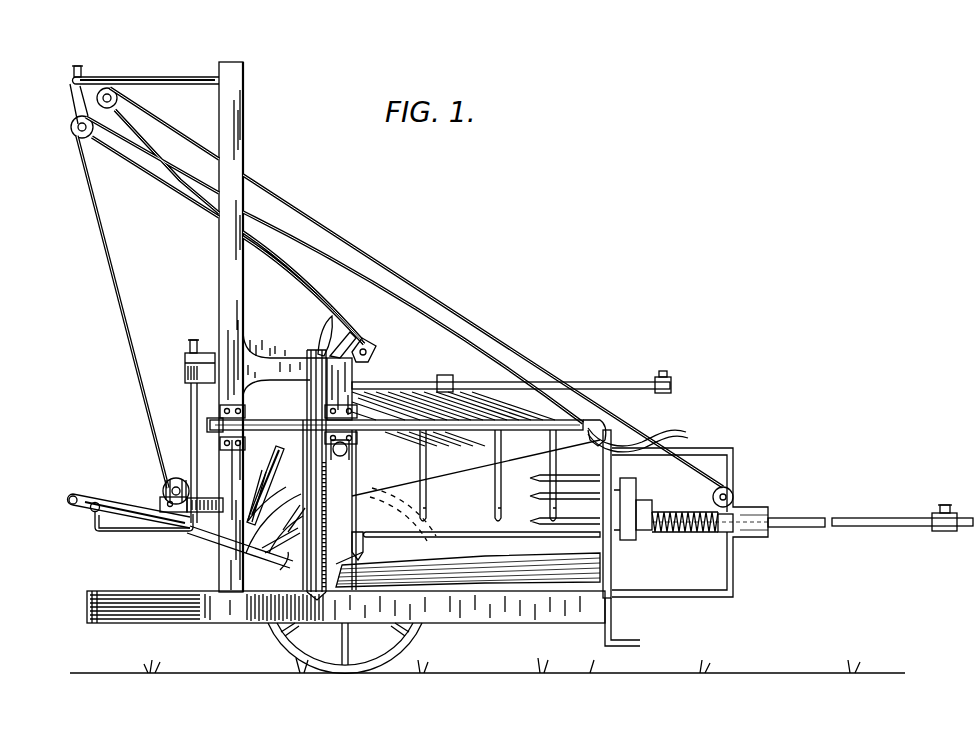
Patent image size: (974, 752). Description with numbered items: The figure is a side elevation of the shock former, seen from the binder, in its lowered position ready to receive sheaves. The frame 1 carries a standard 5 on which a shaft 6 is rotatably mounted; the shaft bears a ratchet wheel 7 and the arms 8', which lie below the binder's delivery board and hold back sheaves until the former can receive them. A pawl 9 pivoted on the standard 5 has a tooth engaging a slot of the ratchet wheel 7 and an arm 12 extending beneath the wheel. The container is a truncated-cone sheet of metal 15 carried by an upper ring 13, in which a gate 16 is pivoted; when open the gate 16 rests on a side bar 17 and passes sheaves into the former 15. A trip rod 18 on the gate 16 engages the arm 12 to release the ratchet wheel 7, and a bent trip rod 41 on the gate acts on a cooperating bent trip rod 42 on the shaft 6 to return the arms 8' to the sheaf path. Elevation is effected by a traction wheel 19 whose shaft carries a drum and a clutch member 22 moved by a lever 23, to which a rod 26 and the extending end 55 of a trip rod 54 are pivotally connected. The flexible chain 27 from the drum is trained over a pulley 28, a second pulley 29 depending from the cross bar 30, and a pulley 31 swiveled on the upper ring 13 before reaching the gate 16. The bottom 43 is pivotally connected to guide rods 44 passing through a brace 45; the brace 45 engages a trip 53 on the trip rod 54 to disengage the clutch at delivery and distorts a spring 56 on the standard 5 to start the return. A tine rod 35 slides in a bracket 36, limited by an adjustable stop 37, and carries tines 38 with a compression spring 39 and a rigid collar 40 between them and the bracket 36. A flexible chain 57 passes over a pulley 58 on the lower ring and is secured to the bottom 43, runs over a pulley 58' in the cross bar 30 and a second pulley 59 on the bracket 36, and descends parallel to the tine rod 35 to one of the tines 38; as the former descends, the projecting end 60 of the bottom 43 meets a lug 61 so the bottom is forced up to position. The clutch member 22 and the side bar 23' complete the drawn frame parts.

The frame 1 is at (226, 108).
The standard 5 is at (220, 303).
The cross bar 30 is at (158, 77).
The pulley 58' is at (106, 70).
The second pulley 29 is at (71, 130).
The flexible chain 57 is at (383, 258).
The flexible chain 27 is at (135, 403).
The trip 53 is at (188, 383).
The trip rod 54 is at (191, 429).
The pulley 28 is at (176, 479).
The rod 26 is at (69, 504).
The lever 23 is at (129, 504).
The extending end 55 is at (122, 533).
The link 23' is at (227, 534).
The shaft 6 is at (474, 431).
The pulley 31 is at (604, 426).
The bent trip rod 42 is at (672, 432).
The bottom 43 is at (310, 398).
The projecting end 60 is at (320, 343).
The lug 61 is at (352, 336).
The pulley 58 is at (379, 346).
The guide rods 44 is at (566, 384).
The brace 45 is at (445, 376).
The sheet of metal 15 is at (402, 396).
The arms 8' is at (476, 477).
The ratchet wheel 7 is at (305, 446).
The spring 56 is at (263, 475).
The pawl 9 is at (349, 470).
The traction wheel 19 is at (410, 649).
The clutch member 22 is at (290, 513).
The trip rod 18 is at (468, 550).
The gate 16 is at (468, 559).
The arm 12 is at (390, 604).
The side bar 17 is at (522, 620).
The upper ring 13 is at (612, 582).
The bent trip rod 41 is at (606, 639).
The bracket 36 is at (733, 460).
The tines 38 is at (628, 495).
The second pulley 59 is at (734, 497).
The spring 39 is at (676, 533).
The collar 40 is at (718, 534).
The tine rod 35 is at (870, 518).
The adjustable stop 37 is at (944, 531).